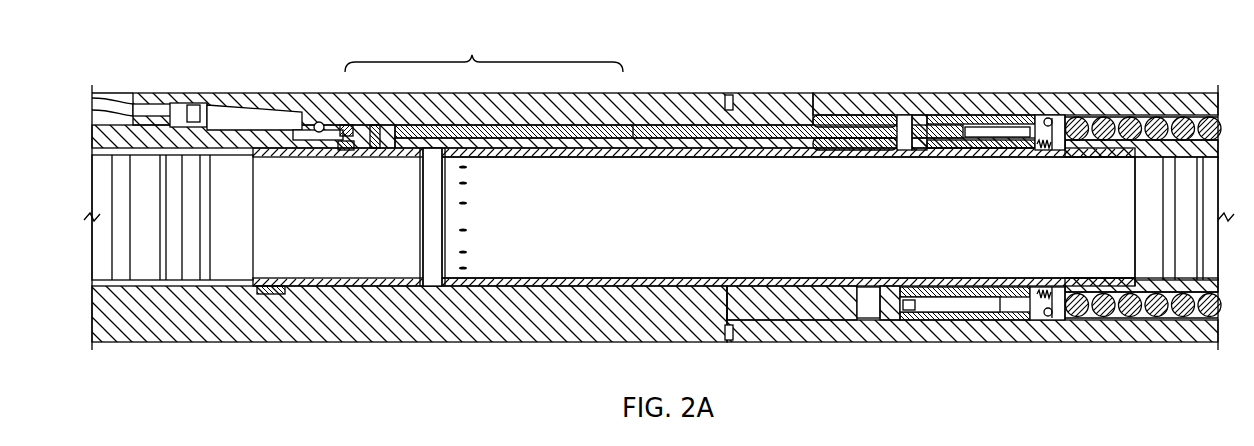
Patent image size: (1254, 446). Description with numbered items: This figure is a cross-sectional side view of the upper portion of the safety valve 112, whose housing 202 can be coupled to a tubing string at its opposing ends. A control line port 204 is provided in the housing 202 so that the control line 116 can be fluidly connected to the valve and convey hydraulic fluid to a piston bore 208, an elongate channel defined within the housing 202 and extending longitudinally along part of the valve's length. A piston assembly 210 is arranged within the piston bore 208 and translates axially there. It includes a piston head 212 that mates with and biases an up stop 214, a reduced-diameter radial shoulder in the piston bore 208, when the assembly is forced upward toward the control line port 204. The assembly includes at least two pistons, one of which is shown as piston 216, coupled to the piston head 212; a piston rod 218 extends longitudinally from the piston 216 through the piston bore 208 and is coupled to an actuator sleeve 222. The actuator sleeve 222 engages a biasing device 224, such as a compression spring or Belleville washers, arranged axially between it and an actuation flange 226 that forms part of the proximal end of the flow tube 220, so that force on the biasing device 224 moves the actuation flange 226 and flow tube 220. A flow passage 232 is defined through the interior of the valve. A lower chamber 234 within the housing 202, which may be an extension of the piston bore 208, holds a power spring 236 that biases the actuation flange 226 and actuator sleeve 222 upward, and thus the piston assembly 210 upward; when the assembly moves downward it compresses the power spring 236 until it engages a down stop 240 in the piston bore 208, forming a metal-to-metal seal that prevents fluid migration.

The safety valve 112 is at (400, 42).
The control line 116 is at (119, 92).
The housing 202 is at (697, 98).
The control line port 204 is at (194, 108).
The piston bore 208 is at (320, 122).
The piston assembly 210 is at (525, 31).
The piston head 212 is at (338, 152).
The up stop 214 is at (347, 124).
The piston 216 is at (374, 150).
The piston rod 218 is at (584, 127).
The flow tube 220 is at (1152, 153).
The actuator sleeve 222 is at (968, 116).
The biasing device 224 is at (1037, 153).
The actuation flange 226 is at (1053, 148).
The flow passage 232 is at (835, 231).
The lower chamber 234 is at (1138, 118).
The power spring 236 is at (1182, 126).
The down stop 240 is at (851, 113).